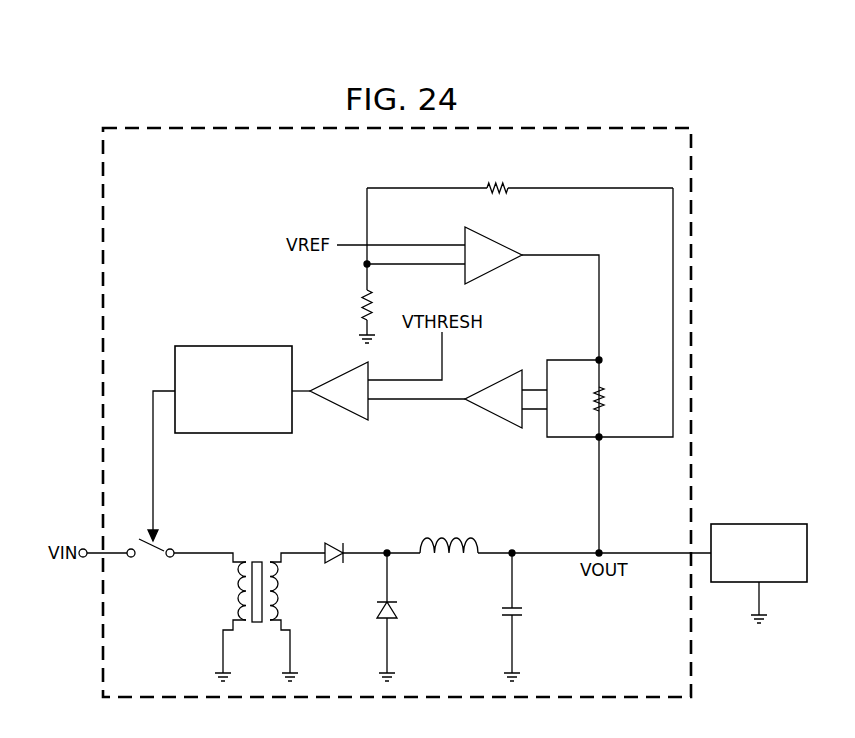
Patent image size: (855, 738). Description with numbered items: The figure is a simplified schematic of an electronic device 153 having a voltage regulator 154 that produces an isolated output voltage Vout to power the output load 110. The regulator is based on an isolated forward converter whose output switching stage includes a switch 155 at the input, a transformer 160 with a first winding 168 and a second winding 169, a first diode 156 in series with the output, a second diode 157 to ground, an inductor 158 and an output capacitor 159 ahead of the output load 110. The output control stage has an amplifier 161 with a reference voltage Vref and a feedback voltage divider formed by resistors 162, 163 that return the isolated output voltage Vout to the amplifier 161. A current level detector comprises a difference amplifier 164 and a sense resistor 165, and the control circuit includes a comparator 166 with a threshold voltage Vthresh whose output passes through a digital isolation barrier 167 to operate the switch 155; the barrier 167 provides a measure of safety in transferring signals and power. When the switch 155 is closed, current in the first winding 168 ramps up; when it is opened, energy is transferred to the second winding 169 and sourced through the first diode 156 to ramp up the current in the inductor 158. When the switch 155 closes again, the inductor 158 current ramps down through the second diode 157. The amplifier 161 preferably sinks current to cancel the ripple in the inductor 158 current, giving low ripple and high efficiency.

The electronic device 153 is at (218, 77).
The voltage regulator 154 is at (596, 124).
The switch 155 is at (149, 548).
The first diode 156 is at (332, 548).
The second diode 157 is at (392, 616).
The inductor 158 is at (460, 537).
The output capacitor 159 is at (524, 613).
The transformer 160 is at (252, 561).
The amplifier 161 is at (498, 240).
The resistor 162 is at (498, 185).
The resistor 163 is at (360, 302).
The difference amplifier 164 is at (492, 418).
The sense resistor 165 is at (606, 398).
The comparator 166 is at (336, 405).
The digital isolation barrier 167 is at (232, 434).
The first winding 168 is at (238, 596).
The second winding 169 is at (278, 594).
The output load 110 is at (782, 583).